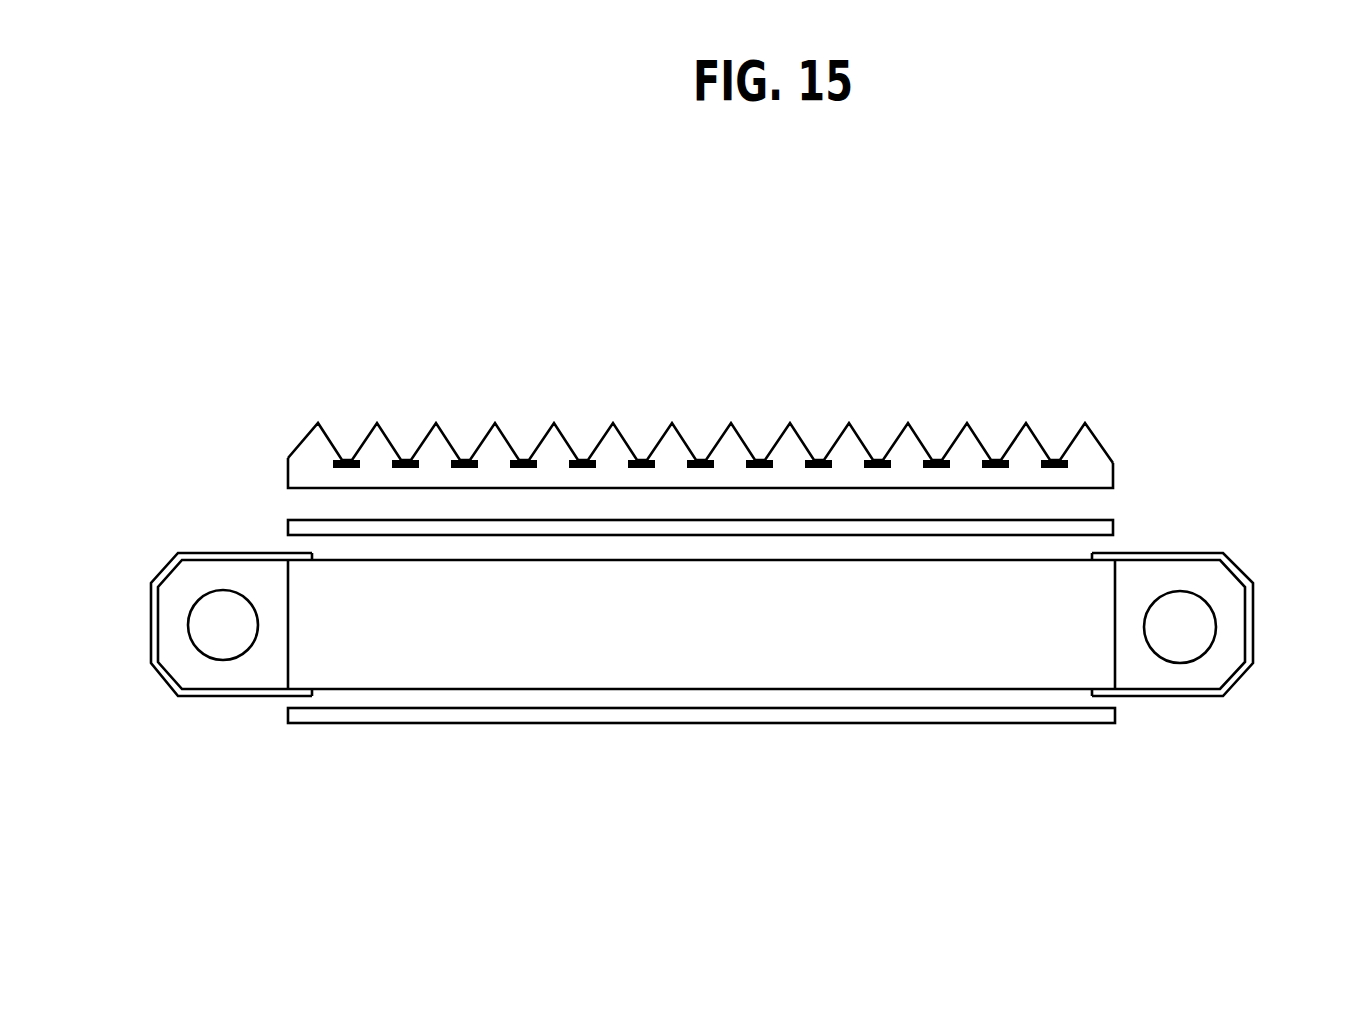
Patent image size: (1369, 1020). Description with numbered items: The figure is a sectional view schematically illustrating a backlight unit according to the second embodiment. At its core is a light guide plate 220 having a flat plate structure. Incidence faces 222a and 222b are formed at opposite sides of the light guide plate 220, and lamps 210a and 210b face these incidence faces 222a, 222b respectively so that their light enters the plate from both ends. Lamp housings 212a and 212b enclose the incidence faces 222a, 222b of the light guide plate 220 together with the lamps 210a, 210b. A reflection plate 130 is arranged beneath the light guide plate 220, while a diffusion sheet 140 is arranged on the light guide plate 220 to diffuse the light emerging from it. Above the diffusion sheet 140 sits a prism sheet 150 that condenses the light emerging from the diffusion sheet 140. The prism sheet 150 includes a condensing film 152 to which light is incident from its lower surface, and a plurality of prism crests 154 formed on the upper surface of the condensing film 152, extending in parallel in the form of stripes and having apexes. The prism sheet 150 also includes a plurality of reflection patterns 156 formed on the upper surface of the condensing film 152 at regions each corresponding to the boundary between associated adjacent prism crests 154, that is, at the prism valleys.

The reflection plate 130 is at (822, 716).
The diffusion sheet 140 is at (1103, 529).
The prism sheet 150 is at (732, 410).
The condensing film 152 is at (308, 473).
The prism crests 154 is at (378, 440).
The reflection patterns 156 is at (342, 458).
The lamp 210a is at (222, 597).
The lamp 210b is at (1197, 639).
The lamp housing 212a is at (176, 595).
The lamp housing 212b is at (1227, 635).
The light guide plate 220 is at (707, 680).
The incidence face 222a is at (288, 652).
The incidence face 222b is at (1117, 655).